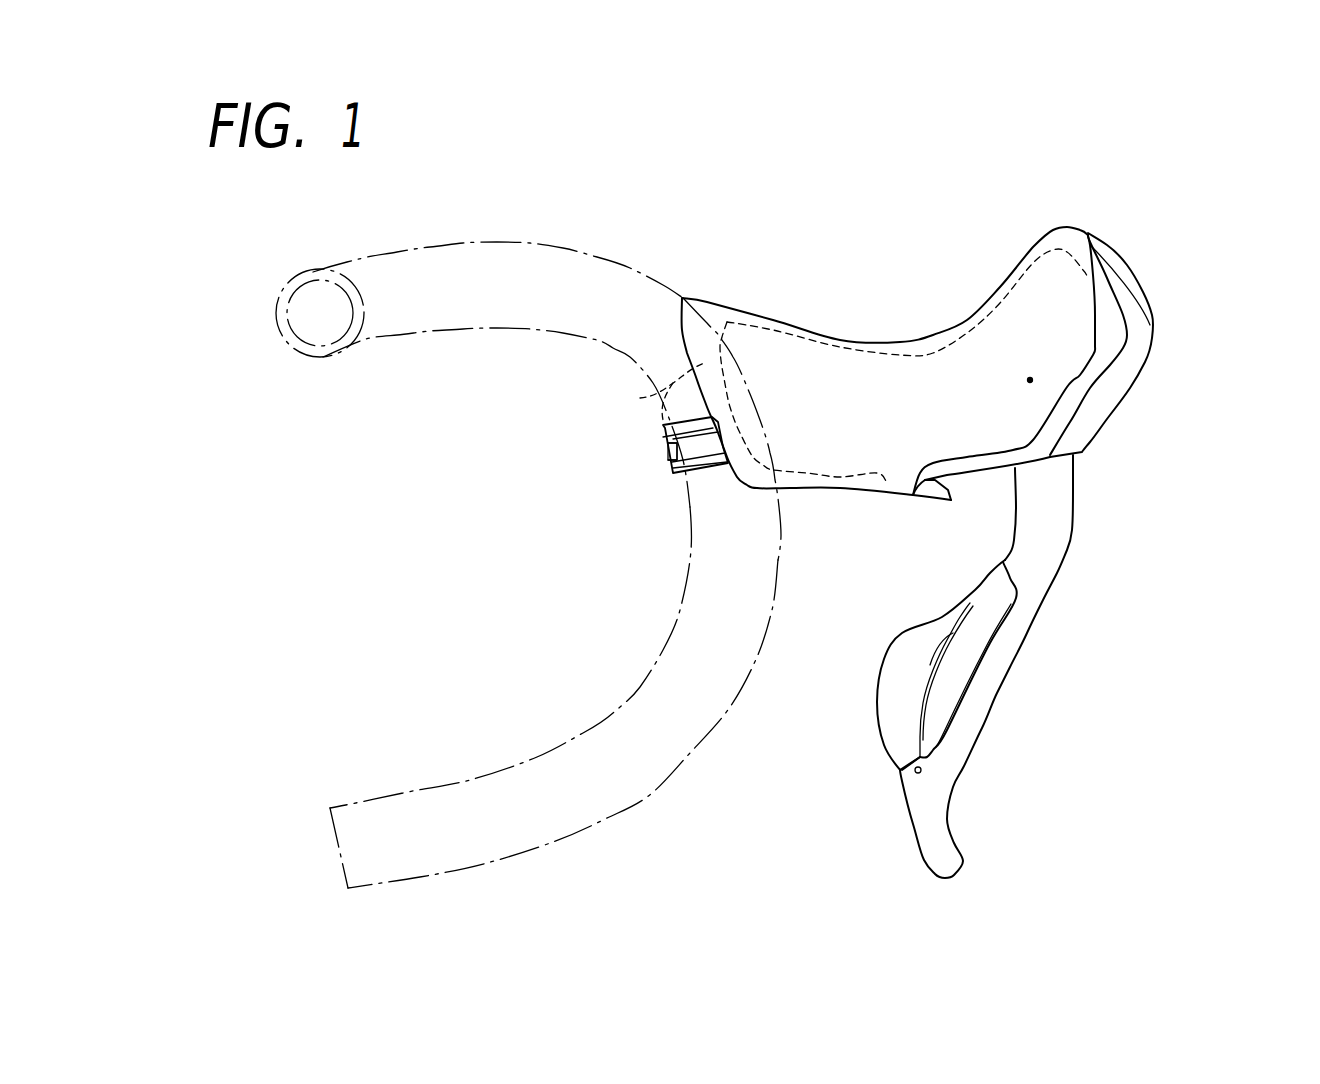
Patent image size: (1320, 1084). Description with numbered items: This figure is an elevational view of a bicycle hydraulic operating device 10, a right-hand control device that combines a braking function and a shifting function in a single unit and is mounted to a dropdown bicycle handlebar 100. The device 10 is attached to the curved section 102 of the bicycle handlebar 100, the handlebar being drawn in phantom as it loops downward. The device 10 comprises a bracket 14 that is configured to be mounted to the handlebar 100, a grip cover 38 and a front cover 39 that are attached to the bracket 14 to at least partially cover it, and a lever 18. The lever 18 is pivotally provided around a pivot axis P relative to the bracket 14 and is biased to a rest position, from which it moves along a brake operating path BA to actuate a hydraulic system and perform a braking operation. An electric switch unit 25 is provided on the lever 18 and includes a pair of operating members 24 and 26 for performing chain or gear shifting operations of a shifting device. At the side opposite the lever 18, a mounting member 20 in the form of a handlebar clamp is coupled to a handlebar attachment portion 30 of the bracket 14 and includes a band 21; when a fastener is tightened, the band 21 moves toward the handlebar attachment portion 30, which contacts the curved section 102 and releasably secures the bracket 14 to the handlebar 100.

The bicycle hydraulic operating device 10 is at (1143, 200).
The bicycle handlebar 100 is at (480, 240).
The curved section 102 is at (709, 575).
The bracket 14 is at (1093, 407).
The lever 18 is at (1014, 673).
The mounting member 20 is at (645, 466).
The band 21 is at (673, 468).
The operating member 24 is at (947, 707).
The electric switch unit 25 is at (875, 749).
The operating member 26 is at (897, 695).
The handlebar attachment portion 30 is at (705, 356).
The grip cover 38 is at (950, 345).
The front cover 39 is at (1150, 340).
The pivot axis P is at (1030, 380).
The brake operating path BA is at (895, 860).